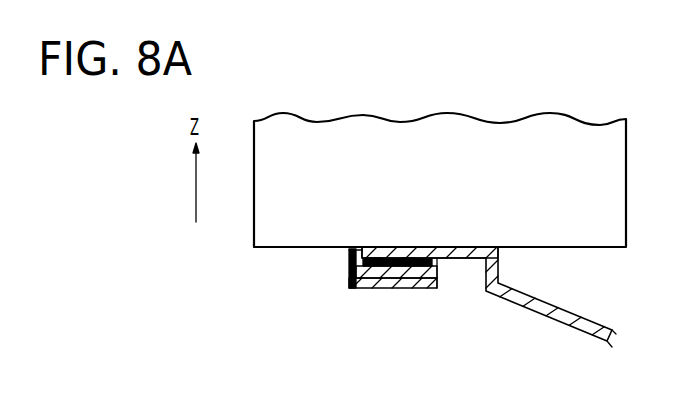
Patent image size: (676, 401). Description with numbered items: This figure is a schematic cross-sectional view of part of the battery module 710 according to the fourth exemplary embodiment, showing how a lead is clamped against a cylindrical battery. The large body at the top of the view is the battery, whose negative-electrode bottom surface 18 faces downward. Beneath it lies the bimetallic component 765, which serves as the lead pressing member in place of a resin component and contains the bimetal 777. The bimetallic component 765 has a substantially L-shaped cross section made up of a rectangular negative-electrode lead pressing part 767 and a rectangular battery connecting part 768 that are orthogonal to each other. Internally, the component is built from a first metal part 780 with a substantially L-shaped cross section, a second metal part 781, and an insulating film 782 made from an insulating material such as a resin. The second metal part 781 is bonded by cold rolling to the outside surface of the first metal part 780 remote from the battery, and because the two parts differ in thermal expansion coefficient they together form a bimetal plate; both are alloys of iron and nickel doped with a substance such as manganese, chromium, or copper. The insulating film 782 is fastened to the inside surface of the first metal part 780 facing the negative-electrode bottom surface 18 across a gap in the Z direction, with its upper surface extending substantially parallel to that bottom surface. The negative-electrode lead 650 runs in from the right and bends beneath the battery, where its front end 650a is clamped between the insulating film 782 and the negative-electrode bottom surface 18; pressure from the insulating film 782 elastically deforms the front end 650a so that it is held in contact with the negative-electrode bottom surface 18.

The battery module 710 is at (435, 98).
The negative-electrode bottom surface 18 is at (263, 250).
The negative-electrode lead 650 is at (537, 320).
The front end of negative-electrode lead 650a is at (430, 252).
The battery connecting part 768 is at (350, 258).
The second metal part 781 is at (379, 289).
The bimetal 777 is at (423, 289).
The bimetallic component 765 is at (358, 292).
The negative-electrode lead pressing part 767 is at (438, 275).
The first metal part 780 is at (376, 258).
The insulating film 782 is at (407, 258).